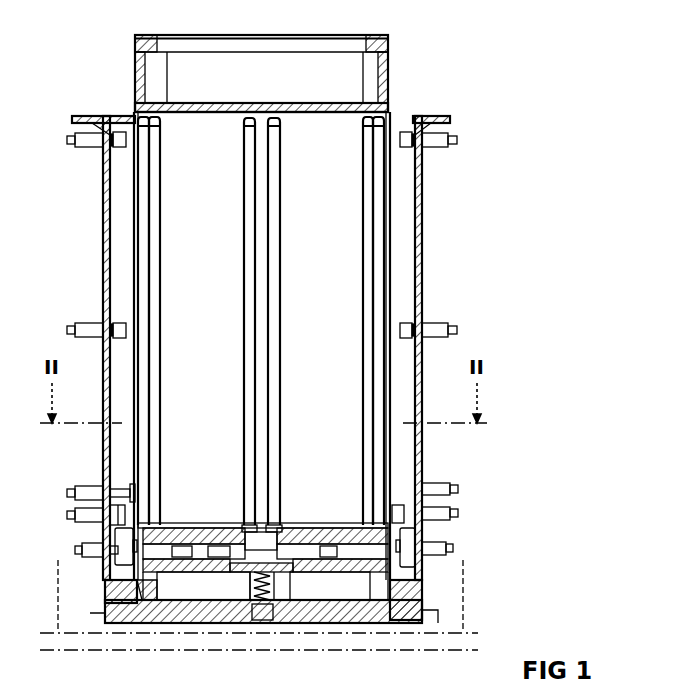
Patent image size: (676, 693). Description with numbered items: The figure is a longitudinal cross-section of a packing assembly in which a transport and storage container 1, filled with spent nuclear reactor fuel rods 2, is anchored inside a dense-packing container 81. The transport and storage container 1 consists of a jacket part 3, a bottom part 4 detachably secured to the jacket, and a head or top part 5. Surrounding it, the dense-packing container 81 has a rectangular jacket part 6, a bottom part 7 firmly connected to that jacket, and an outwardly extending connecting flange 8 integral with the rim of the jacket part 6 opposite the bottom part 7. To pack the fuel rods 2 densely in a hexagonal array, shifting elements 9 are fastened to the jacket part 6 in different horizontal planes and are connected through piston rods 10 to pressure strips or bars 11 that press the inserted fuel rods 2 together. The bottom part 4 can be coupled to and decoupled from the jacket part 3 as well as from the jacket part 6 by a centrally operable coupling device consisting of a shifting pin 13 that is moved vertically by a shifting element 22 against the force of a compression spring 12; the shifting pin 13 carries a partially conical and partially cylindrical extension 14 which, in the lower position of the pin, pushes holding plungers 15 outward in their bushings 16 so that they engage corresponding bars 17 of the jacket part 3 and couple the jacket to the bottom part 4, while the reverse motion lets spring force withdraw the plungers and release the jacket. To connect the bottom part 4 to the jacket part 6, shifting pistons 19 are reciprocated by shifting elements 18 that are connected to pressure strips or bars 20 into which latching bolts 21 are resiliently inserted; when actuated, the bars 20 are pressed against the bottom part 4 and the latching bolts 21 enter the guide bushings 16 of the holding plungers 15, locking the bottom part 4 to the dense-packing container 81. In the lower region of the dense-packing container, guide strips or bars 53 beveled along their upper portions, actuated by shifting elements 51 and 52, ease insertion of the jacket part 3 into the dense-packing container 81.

The transport and storage container 1 is at (317, 255).
The fuel rods 2 is at (244, 180).
The jacket part 3 is at (136, 200).
The bottom part 4 is at (122, 592).
The head or top part 5 is at (137, 45).
The jacket part 6 is at (104, 254).
The bottom part 7 is at (414, 600).
The connecting flange 8 is at (84, 116).
The shifting elements 9 is at (88, 143).
The piston rods 10 is at (112, 146).
The pressure strips or bars 11 is at (120, 132).
The compression spring 12 is at (266, 608).
The shifting pin 13 is at (256, 582).
The extension 14 is at (274, 572).
The holding plungers 15 is at (244, 526).
The bushings 16 is at (160, 545).
The bars 17 is at (150, 566).
The shifting elements 18 is at (60, 565).
The shifting pistons 19 is at (118, 566).
The pressure strips or bars 20 is at (98, 546).
The latching bolts 21 is at (145, 523).
The shifting element 22 is at (262, 622).
The shifting element 51 is at (90, 487).
The shifting element 52 is at (76, 512).
The guide strips or bars 53 is at (118, 505).
The dense-packing container 81 is at (436, 251).